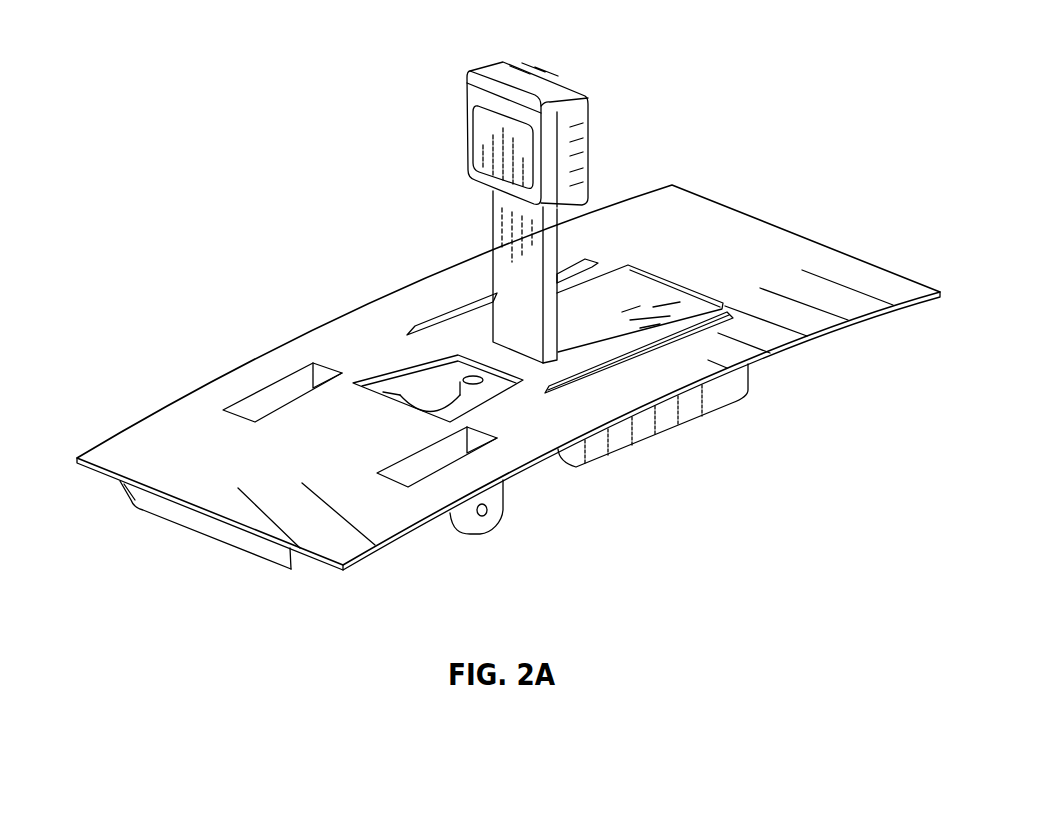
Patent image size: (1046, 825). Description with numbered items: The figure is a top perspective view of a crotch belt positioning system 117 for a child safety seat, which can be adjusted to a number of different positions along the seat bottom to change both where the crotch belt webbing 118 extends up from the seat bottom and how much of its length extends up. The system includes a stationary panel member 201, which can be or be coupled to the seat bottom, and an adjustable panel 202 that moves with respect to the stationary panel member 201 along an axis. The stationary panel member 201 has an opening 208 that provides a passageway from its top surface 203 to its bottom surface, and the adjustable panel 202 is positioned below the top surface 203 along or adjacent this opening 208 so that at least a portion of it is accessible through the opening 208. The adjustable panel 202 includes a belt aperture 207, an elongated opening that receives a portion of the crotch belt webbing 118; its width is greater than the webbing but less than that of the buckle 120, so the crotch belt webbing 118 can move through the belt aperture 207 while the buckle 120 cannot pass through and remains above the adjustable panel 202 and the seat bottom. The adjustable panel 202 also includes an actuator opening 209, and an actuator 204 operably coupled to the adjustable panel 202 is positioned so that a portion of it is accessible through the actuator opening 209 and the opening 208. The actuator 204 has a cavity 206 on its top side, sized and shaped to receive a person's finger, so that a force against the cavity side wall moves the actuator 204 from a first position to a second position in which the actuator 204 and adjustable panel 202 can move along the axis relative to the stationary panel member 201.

The crotch belt positioning system 117 is at (644, 55).
The buckle 120 is at (490, 82).
The crotch belt webbing 118 is at (505, 237).
The stationary panel member 201 is at (148, 410).
The top surface 203 is at (208, 427).
The adjustable panel 202 is at (628, 300).
The opening 208 is at (699, 277).
The actuator 204 is at (455, 373).
The cavity 206 is at (407, 397).
The actuator opening 209 is at (460, 407).
The belt aperture 207 is at (527, 367).